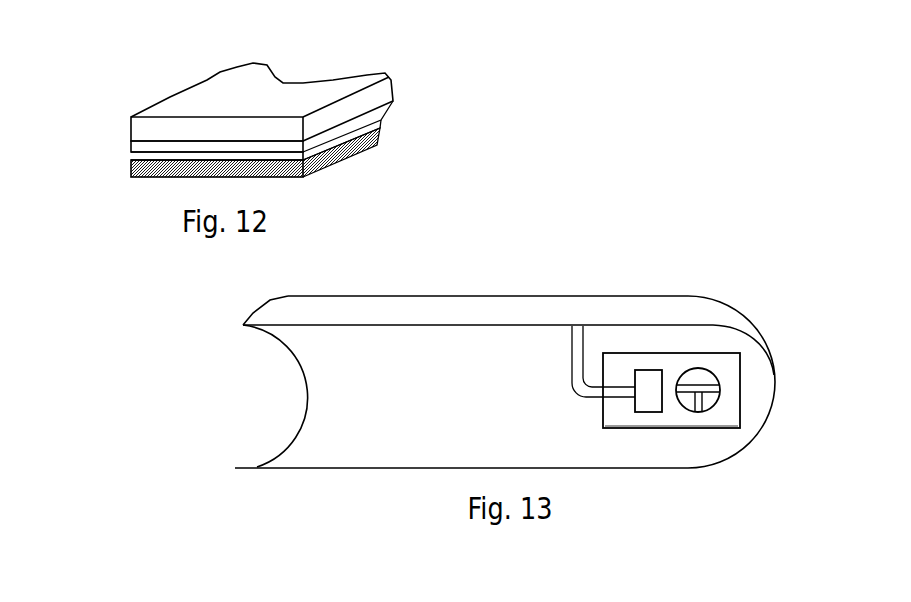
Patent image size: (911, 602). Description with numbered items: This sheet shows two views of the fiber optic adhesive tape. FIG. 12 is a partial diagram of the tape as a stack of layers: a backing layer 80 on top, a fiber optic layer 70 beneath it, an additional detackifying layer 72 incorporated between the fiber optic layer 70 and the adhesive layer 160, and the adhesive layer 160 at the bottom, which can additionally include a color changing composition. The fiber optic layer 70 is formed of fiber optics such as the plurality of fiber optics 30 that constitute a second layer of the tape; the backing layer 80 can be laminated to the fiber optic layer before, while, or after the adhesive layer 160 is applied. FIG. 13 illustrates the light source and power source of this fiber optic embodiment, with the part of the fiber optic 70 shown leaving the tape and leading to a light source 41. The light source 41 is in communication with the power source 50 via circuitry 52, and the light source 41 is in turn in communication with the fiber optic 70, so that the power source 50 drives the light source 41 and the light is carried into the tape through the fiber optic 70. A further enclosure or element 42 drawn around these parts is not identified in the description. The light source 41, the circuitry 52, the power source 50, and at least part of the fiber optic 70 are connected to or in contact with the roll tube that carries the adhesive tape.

In FIG. 13, the fiber optics 30 is at (380, 297).
In FIG. 12, the fiber optic layer 70 is at (213, 143).
In FIG. 13, the fiber optic layer 70 is at (577, 343).
In FIG. 12, the backing layer 80 is at (210, 90).
In FIG. 12, the detackifying layer 72 is at (132, 153).
In FIG. 12, the adhesive layer 160 is at (158, 170).
In FIG. 13, the housing 42 is at (627, 352).
In FIG. 13, the light source 41 is at (650, 378).
In FIG. 13, the power source 50 is at (710, 369).
In FIG. 13, the circuitry 52 is at (722, 418).